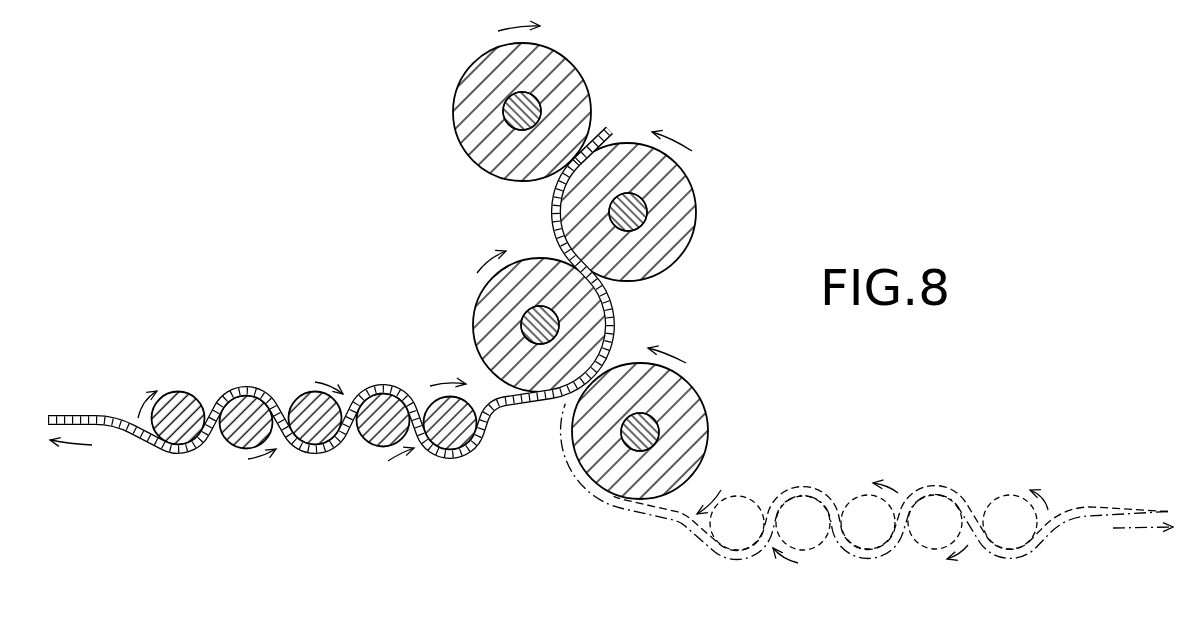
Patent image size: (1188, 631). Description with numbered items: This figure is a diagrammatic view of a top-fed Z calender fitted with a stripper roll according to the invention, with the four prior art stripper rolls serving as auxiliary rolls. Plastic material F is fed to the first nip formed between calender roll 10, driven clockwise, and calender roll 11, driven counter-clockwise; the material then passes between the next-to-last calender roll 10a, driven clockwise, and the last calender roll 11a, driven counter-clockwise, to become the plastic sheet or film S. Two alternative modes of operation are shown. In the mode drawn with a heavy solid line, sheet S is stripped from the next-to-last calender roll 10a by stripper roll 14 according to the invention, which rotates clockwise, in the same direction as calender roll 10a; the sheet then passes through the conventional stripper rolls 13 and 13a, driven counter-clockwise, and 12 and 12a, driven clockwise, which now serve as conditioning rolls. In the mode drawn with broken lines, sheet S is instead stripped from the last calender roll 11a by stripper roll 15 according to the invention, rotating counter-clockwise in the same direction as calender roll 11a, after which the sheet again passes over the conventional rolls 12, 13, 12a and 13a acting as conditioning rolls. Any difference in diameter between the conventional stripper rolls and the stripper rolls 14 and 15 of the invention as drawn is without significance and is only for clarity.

The calender roll 10 is at (470, 98).
The calender roll 11 is at (680, 200).
The calender roll 10a is at (498, 312).
The calender roll 11a is at (680, 400).
The stripper roll 12 is at (313, 413).
The stripper roll 12a is at (178, 412).
The stripper roll 13 is at (382, 430).
The stripper roll 13a is at (242, 435).
The stripper roll 14 is at (450, 432).
The stripper roll 15 is at (742, 498).
The plastic material F is at (598, 137).
The plastic sheet S is at (95, 418).